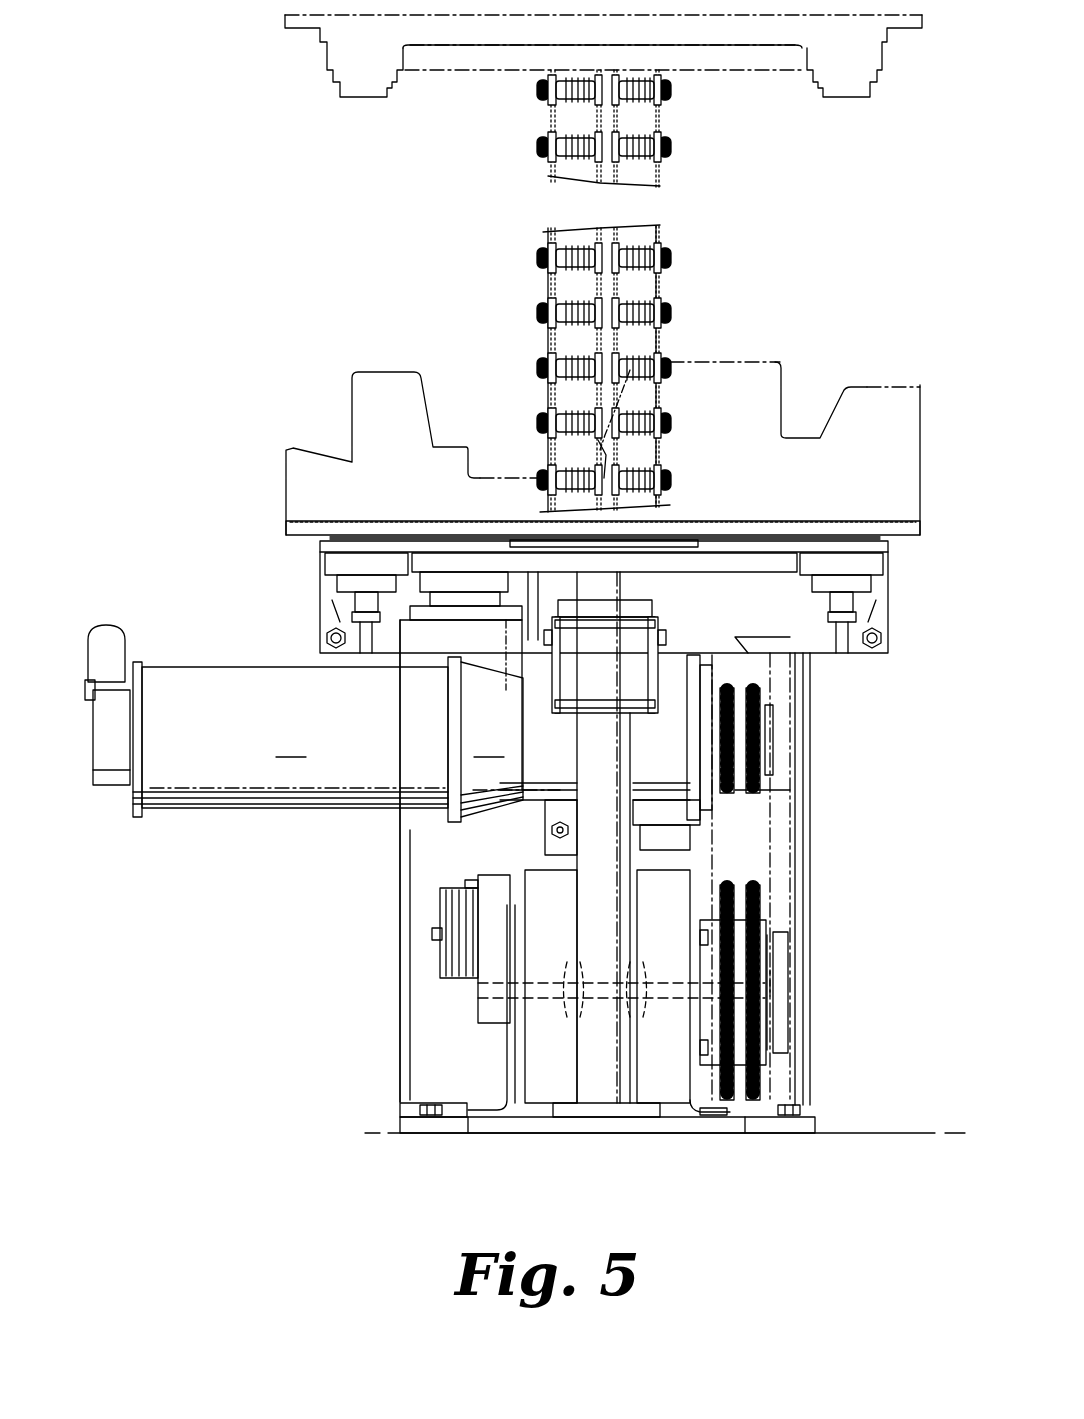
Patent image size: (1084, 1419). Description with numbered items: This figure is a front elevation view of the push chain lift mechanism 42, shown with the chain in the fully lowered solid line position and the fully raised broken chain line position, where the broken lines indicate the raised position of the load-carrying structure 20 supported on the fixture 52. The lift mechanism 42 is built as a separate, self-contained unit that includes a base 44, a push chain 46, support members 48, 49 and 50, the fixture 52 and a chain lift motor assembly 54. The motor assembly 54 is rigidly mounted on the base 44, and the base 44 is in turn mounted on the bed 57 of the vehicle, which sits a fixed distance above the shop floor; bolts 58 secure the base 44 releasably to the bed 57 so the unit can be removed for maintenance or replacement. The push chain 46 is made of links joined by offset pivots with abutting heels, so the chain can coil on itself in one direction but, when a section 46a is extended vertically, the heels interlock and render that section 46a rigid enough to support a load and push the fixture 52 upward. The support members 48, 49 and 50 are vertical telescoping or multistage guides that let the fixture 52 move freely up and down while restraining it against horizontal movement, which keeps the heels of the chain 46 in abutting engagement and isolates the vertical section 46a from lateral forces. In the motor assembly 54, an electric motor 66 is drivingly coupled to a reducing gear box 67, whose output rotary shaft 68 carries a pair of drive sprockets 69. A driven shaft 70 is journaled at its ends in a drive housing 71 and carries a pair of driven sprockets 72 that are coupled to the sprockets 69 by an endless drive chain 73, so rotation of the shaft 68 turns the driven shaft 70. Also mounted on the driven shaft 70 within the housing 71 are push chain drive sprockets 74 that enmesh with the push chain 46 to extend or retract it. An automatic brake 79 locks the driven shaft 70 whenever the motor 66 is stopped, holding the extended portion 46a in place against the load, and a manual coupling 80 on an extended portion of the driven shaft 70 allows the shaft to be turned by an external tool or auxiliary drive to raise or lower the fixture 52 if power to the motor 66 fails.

The pallet tray 20 is at (910, 387).
The lift mechanism 42 is at (818, 745).
The base 44 is at (398, 1120).
The push chain 46 is at (662, 290).
The extended section of the push chain 46a is at (663, 283).
The support member 48 is at (597, 1087).
The support member 49 is at (398, 872).
The support member 50 is at (793, 815).
The fixture 52 is at (885, 552).
The chain lift motor assembly 54 is at (322, 702).
The bed 57 is at (867, 1133).
The bolts 58 is at (428, 1103).
The electric motor 66 is at (266, 721).
The reducing gear box 67 is at (504, 739).
The output rotary shaft 68 is at (772, 725).
The drive sprockets 69 is at (727, 688).
The driven shaft 70 is at (780, 983).
The drive housing 71 is at (553, 1067).
The driven sprockets 72 is at (753, 885).
The drive chain 73 is at (773, 793).
The push chain drive sprockets 74 is at (648, 975).
The automatic brake 79 is at (780, 1013).
The manual coupling 80 is at (790, 972).